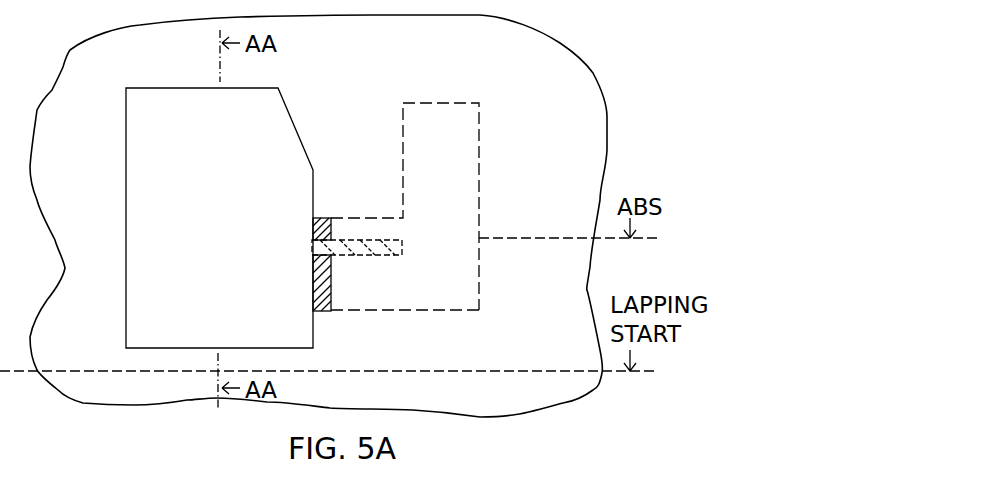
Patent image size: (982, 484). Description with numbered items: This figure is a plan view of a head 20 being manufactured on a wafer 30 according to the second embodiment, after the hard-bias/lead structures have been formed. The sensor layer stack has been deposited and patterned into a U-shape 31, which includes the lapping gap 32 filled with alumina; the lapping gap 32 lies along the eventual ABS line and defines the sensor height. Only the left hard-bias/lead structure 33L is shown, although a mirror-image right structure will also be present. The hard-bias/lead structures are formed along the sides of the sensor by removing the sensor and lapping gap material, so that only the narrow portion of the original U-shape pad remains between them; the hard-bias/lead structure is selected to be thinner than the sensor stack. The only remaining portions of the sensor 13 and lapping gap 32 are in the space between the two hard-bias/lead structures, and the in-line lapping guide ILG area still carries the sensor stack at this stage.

The wafer 30 is at (602, 78).
The left hard-bias/lead structure 33L is at (142, 133).
The sensor 13 is at (320, 220).
The in-line lapping guide ILG is at (328, 290).
The lapping gap 32 is at (402, 243).
The head 20 is at (502, 147).
The U-shape 31 is at (433, 307).